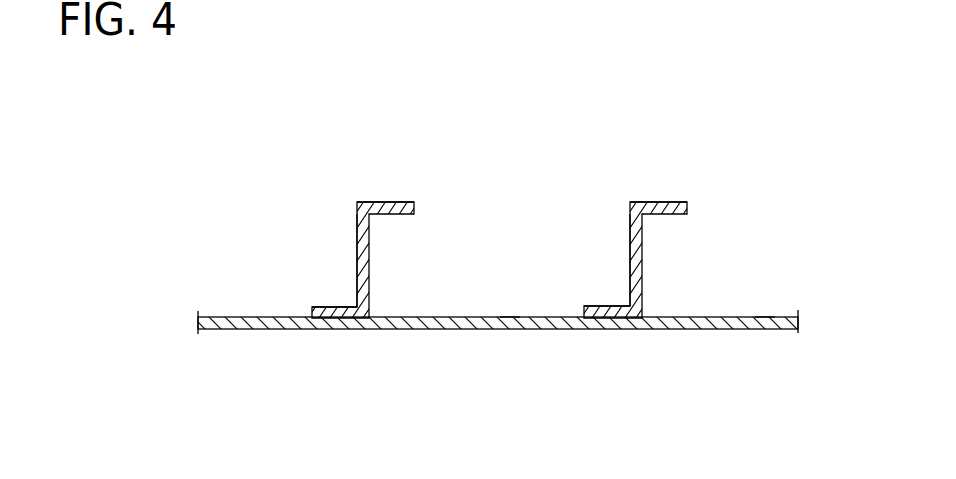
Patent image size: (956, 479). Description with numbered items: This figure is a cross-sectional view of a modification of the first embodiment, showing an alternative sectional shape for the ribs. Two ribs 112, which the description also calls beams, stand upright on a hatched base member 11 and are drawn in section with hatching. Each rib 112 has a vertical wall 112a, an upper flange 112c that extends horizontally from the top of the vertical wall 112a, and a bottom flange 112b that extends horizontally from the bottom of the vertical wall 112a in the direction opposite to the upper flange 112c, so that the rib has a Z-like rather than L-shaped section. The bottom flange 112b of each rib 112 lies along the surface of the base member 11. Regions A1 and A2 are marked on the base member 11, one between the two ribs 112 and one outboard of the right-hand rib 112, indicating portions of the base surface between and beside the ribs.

The bottom plate 11 is at (233, 330).
The rib 112 is at (380, 202).
The vertical wall 112a is at (370, 263).
The bottom flange 112b is at (327, 306).
The upper flange 112c is at (414, 203).
The first region A1 is at (511, 316).
The second region A2 is at (765, 316).